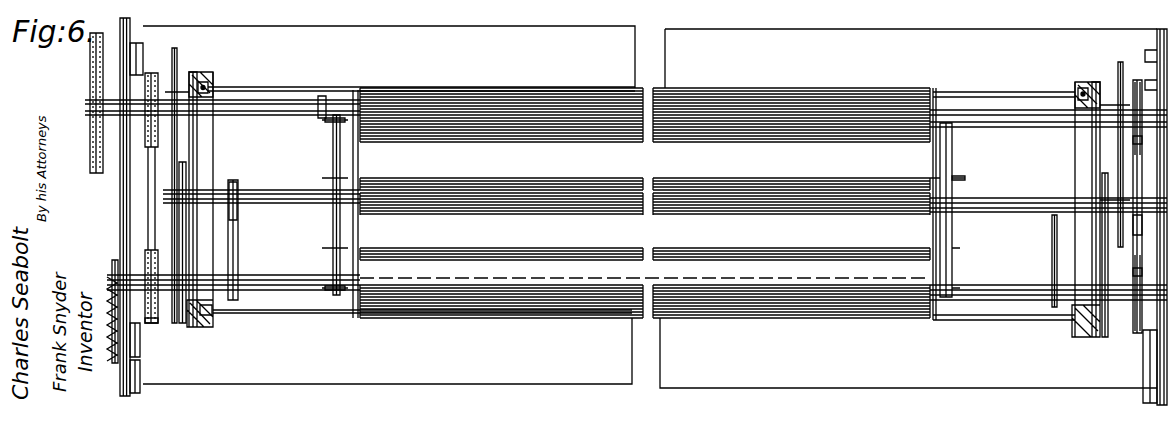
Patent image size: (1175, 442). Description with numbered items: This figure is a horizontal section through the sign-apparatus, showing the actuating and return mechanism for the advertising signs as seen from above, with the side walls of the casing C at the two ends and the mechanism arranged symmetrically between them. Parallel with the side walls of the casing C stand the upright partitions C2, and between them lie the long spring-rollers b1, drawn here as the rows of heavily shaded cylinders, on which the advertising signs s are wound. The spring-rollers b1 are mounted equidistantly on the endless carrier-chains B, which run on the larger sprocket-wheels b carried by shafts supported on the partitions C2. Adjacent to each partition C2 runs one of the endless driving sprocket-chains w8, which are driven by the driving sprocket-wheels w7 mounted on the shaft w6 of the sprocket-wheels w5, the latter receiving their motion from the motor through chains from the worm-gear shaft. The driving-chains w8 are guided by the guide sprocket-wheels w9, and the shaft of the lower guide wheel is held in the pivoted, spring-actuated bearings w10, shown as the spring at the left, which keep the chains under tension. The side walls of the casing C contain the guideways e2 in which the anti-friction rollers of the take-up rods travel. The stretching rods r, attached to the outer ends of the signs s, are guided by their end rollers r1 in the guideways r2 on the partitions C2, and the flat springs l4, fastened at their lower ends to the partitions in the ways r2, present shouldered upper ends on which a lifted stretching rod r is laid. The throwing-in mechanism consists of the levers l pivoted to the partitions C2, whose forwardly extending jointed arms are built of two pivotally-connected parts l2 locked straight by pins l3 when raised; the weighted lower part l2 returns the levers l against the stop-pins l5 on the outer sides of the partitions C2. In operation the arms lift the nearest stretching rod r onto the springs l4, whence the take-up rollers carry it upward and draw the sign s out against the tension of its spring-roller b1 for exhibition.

The casing C is at (122, 205).
The upright partitions C2 is at (193, 149).
The endless carrier-chains B is at (342, 231).
The sprocket-wheels b is at (342, 158).
The spring-rollers b1 is at (323, 283).
The guideways e2 is at (138, 58).
The levers l is at (178, 146).
The pivotally-connected parts l2 is at (248, 213).
The pins l3 is at (238, 237).
The flat springs l4 is at (203, 311).
The stop-pins l5 is at (175, 92).
The stretching rods r is at (276, 91).
The rollers r1 is at (213, 90).
The guideways r2 is at (213, 83).
The advertising signs s is at (400, 93).
The sprocket-wheels w5 is at (89, 98).
The shaft w6 is at (322, 103).
The driving sprocket-wheels w7 is at (152, 72).
The endless driving sprocket-chains w8 is at (1138, 232).
The guide sprocket-wheels w9 is at (149, 326).
The spring-actuated bearings w10 is at (100, 249).